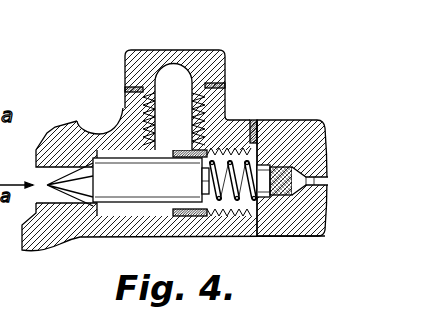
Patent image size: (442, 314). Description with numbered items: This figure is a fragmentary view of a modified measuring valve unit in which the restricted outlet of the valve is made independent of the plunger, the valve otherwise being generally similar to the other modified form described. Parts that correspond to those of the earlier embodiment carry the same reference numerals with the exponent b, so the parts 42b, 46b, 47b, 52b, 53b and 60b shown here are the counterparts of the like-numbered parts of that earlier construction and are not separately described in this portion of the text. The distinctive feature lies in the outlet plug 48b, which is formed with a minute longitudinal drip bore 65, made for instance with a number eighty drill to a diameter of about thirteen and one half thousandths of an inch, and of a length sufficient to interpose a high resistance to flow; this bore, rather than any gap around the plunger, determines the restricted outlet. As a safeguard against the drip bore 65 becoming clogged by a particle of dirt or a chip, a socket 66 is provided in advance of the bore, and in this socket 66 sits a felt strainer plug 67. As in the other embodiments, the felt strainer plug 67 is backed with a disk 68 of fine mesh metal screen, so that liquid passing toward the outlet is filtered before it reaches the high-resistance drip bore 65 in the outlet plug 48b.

The inlet bore 42b is at (77, 120).
The cap nut 46b is at (226, 50).
The central bore 47b is at (177, 90).
The gasket 60b is at (255, 120).
The outlet plug 48b is at (295, 139).
The disk of fine mesh metal screen 68 is at (301, 166).
The nozzle tip 52b is at (80, 201).
The nozzle body 53b is at (147, 192).
The felt strainer plug 67 is at (284, 197).
The drip bore 65 is at (304, 197).
The socket 66 is at (268, 200).